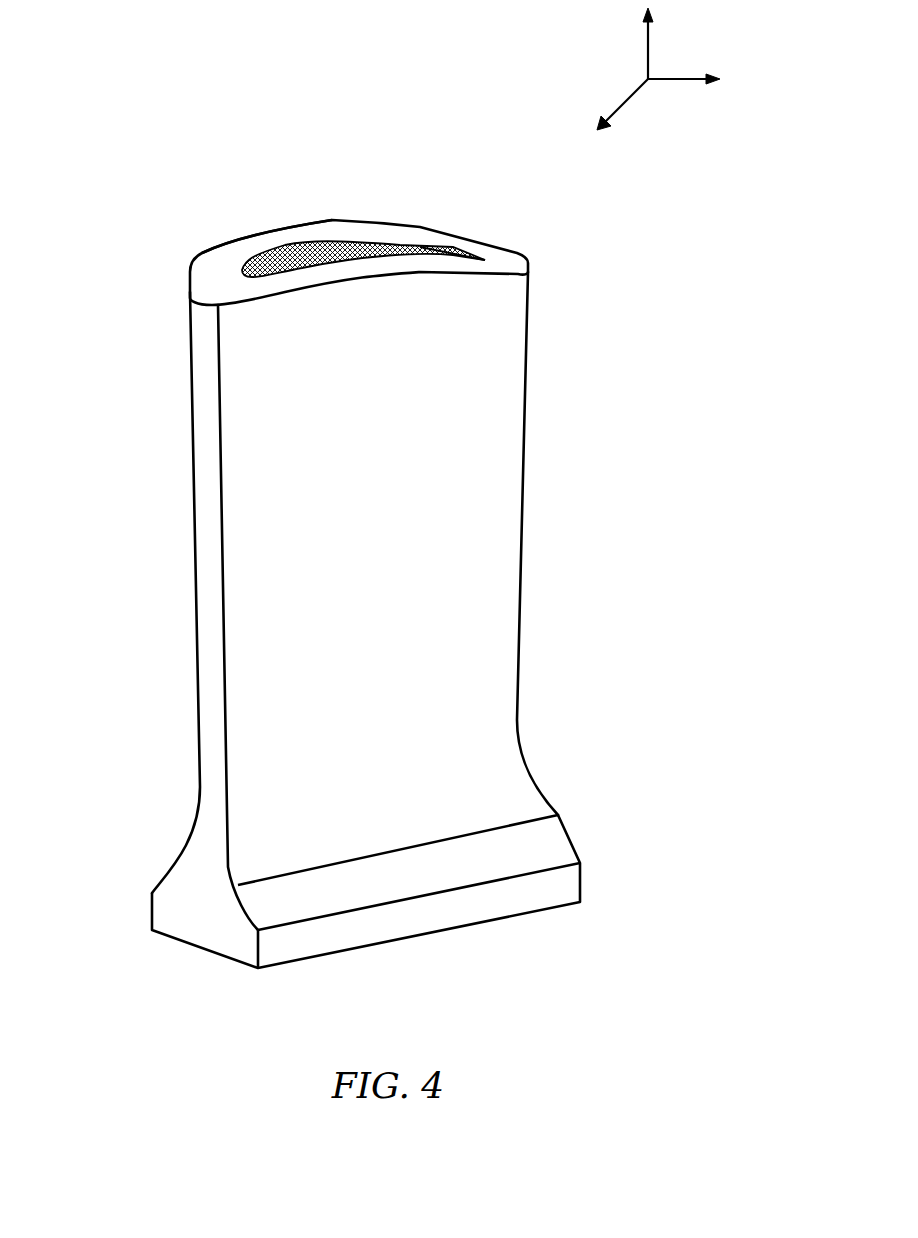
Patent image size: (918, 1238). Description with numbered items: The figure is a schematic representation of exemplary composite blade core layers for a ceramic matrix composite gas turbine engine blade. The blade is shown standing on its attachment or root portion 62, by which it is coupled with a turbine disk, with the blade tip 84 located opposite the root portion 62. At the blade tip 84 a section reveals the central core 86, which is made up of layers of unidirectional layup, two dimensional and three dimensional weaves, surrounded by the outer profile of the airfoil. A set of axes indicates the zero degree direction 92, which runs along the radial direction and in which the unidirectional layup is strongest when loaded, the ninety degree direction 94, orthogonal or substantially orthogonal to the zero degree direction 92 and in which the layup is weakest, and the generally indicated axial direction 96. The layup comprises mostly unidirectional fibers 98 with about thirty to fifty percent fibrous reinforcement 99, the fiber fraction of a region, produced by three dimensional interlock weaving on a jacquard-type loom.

The root portion 62 is at (167, 970).
The blade tip 84 is at (285, 243).
The central core 86 is at (138, 203).
The zero degree direction 92 is at (648, 47).
The ninety degree direction 94 is at (622, 102).
The axial direction 96 is at (682, 80).
The unidirectional fibers 98 is at (360, 238).
The fibrous reinforcement 99 is at (450, 253).